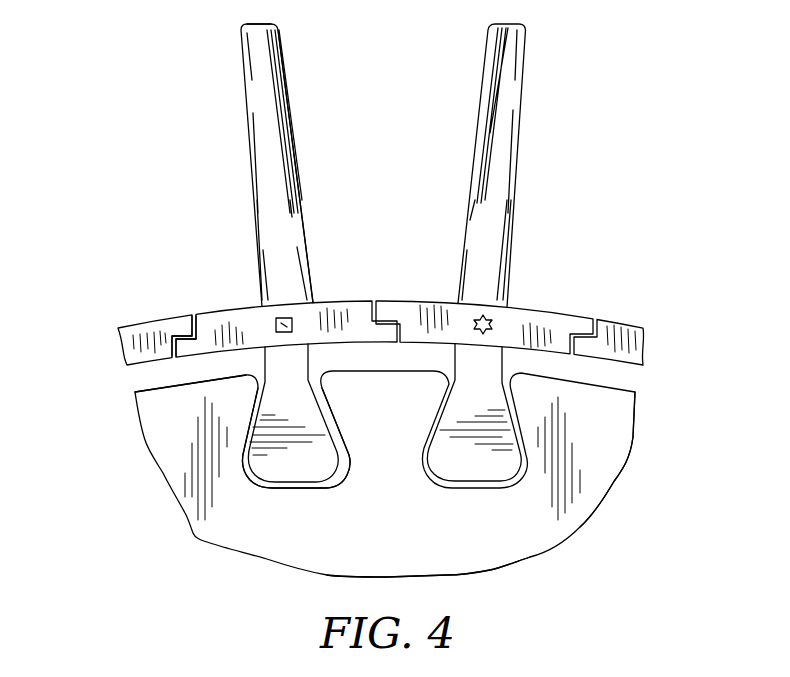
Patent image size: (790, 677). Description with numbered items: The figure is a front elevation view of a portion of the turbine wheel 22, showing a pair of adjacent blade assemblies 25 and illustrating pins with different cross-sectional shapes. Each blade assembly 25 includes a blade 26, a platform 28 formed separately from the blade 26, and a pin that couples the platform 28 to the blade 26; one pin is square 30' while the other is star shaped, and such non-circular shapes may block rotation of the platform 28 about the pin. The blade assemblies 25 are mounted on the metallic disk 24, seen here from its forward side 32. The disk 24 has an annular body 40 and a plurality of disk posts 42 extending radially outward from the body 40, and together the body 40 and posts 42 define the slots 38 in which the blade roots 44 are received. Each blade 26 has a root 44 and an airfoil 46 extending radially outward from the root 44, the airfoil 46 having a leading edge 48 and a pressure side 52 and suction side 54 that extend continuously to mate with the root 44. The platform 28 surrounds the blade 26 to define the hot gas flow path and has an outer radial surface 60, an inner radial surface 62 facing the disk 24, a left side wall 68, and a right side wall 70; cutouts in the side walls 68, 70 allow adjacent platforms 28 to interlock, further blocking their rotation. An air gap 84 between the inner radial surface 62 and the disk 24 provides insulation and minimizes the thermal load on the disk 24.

The turbine wheel 22 is at (104, 129).
The disk 24 is at (254, 522).
The blade assembly 25 is at (171, 255).
The blade 26 is at (225, 125).
The platform 28 is at (335, 297).
The square pin 30' is at (349, 425).
The forward side 32 is at (462, 564).
The slots 38 is at (321, 487).
The annular body 40 is at (508, 552).
The disk posts 42 is at (605, 427).
The root 44 is at (282, 432).
The airfoil 46 is at (290, 58).
The leading edge 48 is at (267, 133).
The pressure side 52 is at (298, 191).
The suction side 54 is at (249, 155).
The outer radial surface 60 is at (232, 311).
The inner radial surface 62 is at (183, 361).
The left side wall 68 is at (173, 345).
The right side wall 70 is at (398, 332).
The air gap 84 is at (166, 368).